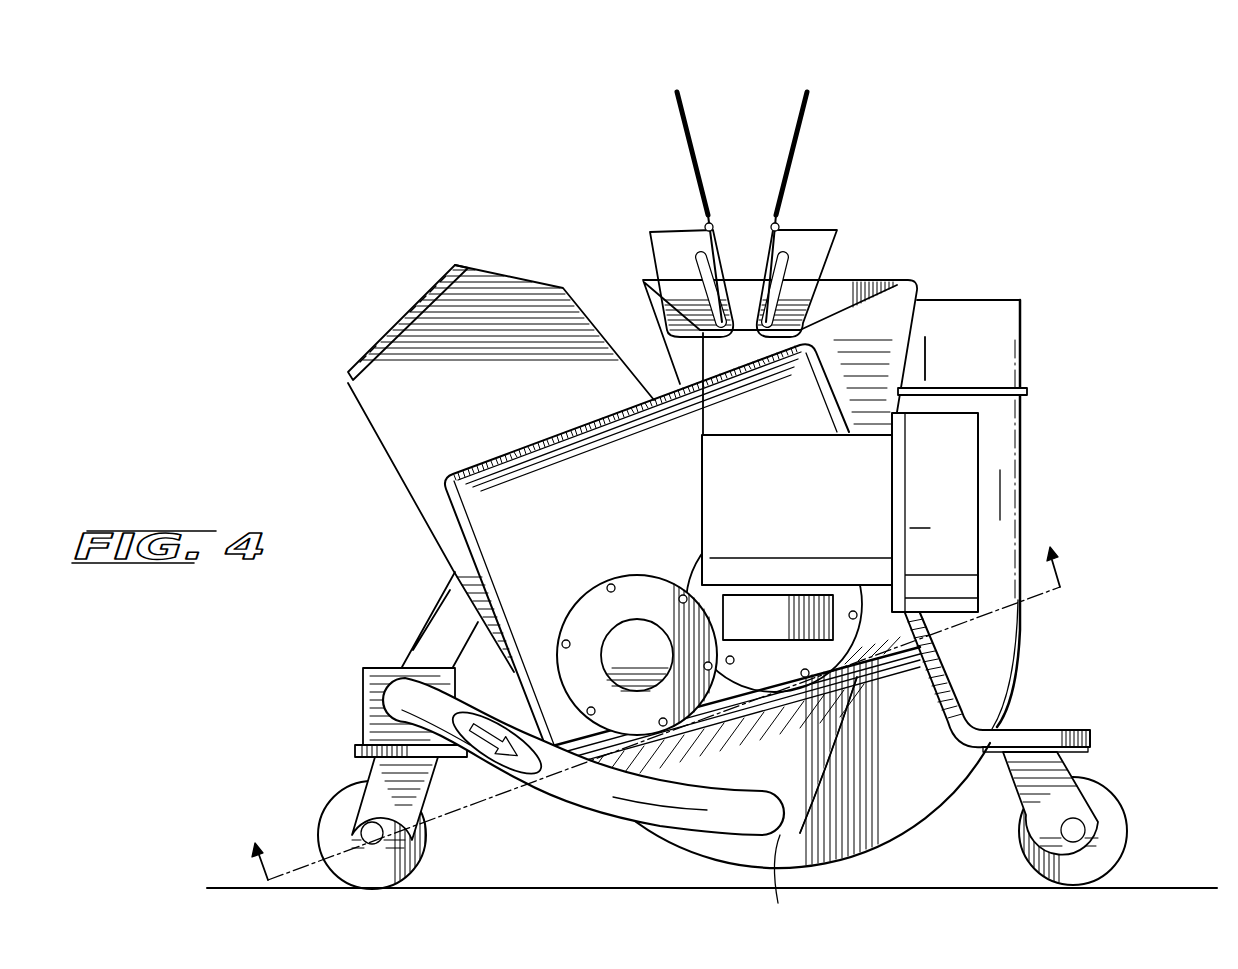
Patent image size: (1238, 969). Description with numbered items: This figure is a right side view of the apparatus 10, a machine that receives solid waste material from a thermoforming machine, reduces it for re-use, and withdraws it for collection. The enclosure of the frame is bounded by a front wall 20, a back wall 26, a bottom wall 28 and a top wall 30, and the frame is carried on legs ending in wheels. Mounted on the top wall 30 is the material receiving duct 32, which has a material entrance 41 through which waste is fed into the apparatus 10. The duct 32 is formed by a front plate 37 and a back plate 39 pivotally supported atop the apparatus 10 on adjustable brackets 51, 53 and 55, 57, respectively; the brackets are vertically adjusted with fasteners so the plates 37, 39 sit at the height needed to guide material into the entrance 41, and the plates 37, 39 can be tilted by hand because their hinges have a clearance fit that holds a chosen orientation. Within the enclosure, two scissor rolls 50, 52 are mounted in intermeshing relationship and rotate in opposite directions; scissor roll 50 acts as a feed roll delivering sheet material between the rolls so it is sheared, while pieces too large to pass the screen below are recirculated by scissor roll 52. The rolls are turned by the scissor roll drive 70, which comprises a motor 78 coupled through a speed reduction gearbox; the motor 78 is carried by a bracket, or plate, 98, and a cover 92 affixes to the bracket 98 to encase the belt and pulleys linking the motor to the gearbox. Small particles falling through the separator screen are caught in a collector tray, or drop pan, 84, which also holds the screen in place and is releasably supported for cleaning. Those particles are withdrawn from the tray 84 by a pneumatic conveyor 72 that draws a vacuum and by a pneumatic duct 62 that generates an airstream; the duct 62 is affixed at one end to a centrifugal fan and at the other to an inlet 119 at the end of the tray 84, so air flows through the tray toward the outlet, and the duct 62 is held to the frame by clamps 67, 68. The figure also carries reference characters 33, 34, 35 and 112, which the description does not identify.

The apparatus 10 is at (240, 830).
The front wall 20 is at (447, 513).
The back wall 26 is at (829, 352).
The bottom wall 28 is at (890, 663).
The top wall 30 is at (551, 437).
The material receiving duct 32 is at (752, 202).
The hopper 33 is at (473, 423).
The hopper lip 34 is at (403, 312).
The hopper plate 35 is at (379, 322).
The front plate 37 is at (693, 160).
The back plate 39 is at (790, 174).
The material entrance 41 is at (734, 110).
The scissor roll 50 is at (738, 620).
The adjustable bracket 51 is at (650, 232).
The scissor roll 52 is at (598, 615).
The adjustable bracket 53 is at (639, 271).
The adjustable bracket 55 is at (858, 271).
The adjustable bracket 57 is at (837, 228).
The pneumatic duct 62 is at (433, 612).
The clamp 67 is at (369, 696).
The clamp 68 is at (380, 665).
The scissor roll drive 70 is at (1005, 502).
The pneumatic conveyor 72 is at (1034, 657).
The motor 78 is at (818, 521).
The collector tray 84 is at (830, 768).
The cover 92 is at (958, 501).
The bracket 98 is at (940, 660).
The guard 112 is at (968, 300).
The inlet 119 is at (786, 888).